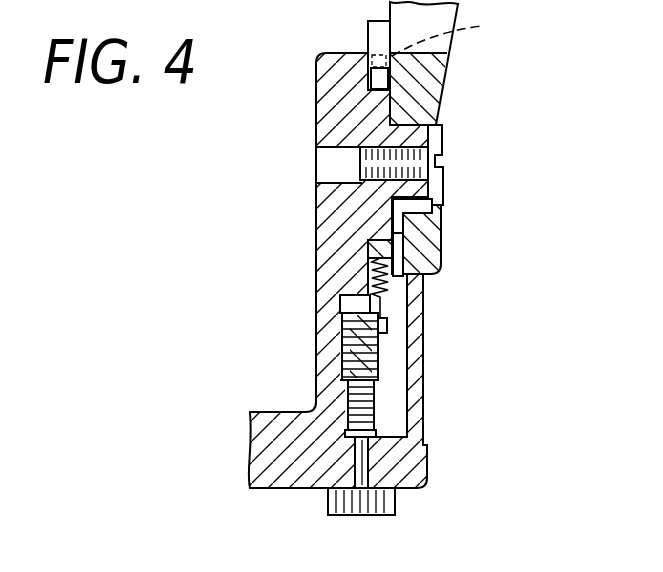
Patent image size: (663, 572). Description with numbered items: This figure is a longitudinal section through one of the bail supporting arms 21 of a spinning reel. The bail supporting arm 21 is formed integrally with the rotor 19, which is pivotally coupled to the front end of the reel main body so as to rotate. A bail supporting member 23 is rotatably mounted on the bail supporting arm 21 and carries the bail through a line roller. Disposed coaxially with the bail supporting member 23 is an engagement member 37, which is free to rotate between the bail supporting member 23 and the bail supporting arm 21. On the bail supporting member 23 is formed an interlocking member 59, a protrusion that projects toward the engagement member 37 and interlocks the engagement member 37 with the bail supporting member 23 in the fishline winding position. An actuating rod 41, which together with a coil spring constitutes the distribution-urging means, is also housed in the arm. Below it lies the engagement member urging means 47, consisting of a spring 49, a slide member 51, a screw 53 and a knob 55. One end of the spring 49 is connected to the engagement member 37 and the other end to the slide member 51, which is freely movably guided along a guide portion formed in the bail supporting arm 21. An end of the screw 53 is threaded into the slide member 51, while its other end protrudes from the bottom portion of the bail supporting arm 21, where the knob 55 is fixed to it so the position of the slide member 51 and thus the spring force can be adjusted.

The rotor 19 is at (272, 432).
The bail supporting arm 21 is at (340, 103).
The bail supporting member 23 is at (425, 90).
The engagement member 37 is at (377, 36).
The actuating rod 41 is at (417, 238).
The engagement member urging means 47 is at (380, 403).
The spring 49 is at (407, 287).
The slide member 51 is at (378, 353).
The screw 53 is at (283, 486).
The knob 55 is at (397, 513).
The interlocking member 59 is at (450, 34).